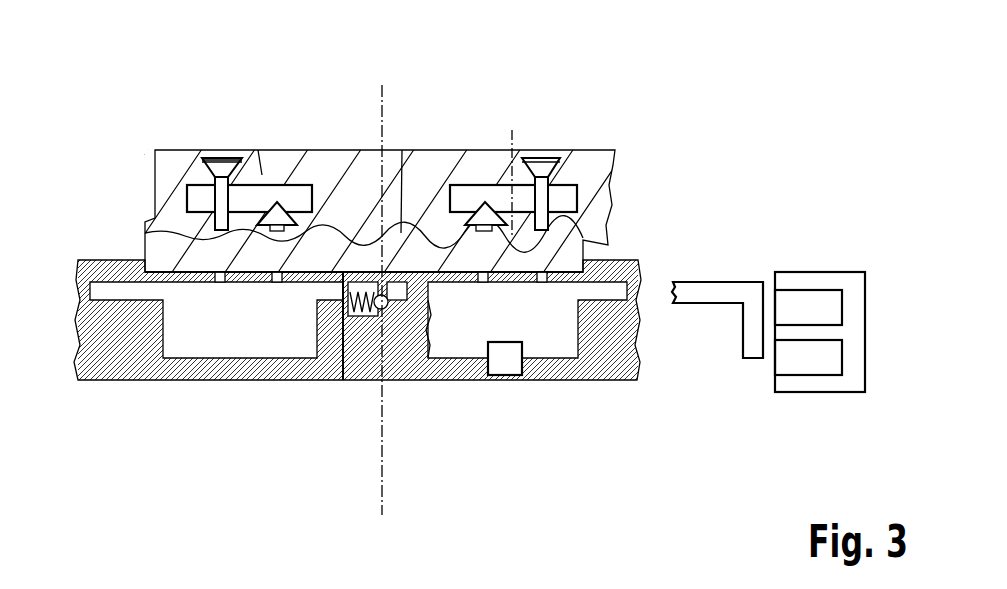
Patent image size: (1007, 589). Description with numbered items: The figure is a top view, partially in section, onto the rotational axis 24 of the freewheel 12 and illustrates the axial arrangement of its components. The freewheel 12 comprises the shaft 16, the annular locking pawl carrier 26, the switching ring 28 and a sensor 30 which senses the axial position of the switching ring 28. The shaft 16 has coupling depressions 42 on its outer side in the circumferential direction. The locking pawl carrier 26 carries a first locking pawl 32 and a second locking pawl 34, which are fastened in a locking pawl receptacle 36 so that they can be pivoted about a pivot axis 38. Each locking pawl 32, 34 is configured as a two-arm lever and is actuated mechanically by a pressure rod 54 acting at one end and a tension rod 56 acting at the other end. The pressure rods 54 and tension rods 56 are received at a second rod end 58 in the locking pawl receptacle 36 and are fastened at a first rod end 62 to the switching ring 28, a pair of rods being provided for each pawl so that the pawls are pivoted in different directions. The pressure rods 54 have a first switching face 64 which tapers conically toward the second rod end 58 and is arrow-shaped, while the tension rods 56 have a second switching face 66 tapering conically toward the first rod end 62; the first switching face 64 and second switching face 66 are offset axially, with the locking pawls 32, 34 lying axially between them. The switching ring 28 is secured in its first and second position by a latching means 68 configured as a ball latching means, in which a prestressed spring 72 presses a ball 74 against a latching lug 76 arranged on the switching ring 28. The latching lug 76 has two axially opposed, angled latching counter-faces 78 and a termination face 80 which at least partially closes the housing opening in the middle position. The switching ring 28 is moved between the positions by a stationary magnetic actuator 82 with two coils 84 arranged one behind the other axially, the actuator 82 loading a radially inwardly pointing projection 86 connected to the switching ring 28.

The freewheel 12 is at (693, 78).
The shaft 16 is at (598, 165).
The rotational axis 24 is at (382, 505).
The locking pawl carrier 26 is at (112, 358).
The switching ring 28 is at (193, 338).
The sensor 30 is at (500, 363).
The first locking pawl 32 is at (200, 197).
The second locking pawl 34 is at (496, 185).
The locking pawl receptacle 36 is at (578, 246).
The pivot axis 38 is at (512, 130).
The coupling depressions 42 is at (593, 197).
The pressure rod 54 is at (258, 150).
The tension rod 56 is at (218, 150).
The second rod end 58 is at (468, 185).
The first rod end 62 is at (486, 283).
The first switching face 64 is at (299, 196).
The second switching face 66 is at (193, 170).
The latching means 68 is at (350, 346).
The spring 72 is at (349, 322).
The ball 74 is at (397, 317).
The latching lug 76 is at (402, 150).
The latching counter-faces 78 is at (368, 272).
The termination face 80 is at (220, 268).
The magnetic actuator 82 is at (836, 256).
The coils 84 is at (810, 307).
The projection 86 is at (752, 350).